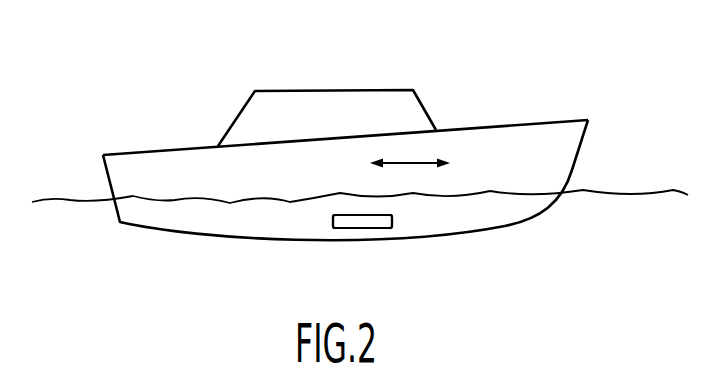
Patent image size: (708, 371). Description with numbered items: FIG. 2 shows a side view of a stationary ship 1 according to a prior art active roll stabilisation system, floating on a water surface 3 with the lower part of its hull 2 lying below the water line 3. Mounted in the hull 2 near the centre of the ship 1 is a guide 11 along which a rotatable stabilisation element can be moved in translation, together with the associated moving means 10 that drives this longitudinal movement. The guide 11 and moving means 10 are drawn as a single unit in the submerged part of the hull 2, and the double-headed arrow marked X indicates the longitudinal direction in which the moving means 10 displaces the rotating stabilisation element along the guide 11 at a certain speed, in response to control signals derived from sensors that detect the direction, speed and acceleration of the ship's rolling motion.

The ship 1 is at (345, 152).
The hull 2 is at (462, 213).
The water surface 3 is at (603, 198).
The moving means 10 is at (345, 224).
The guide 11 is at (362, 221).